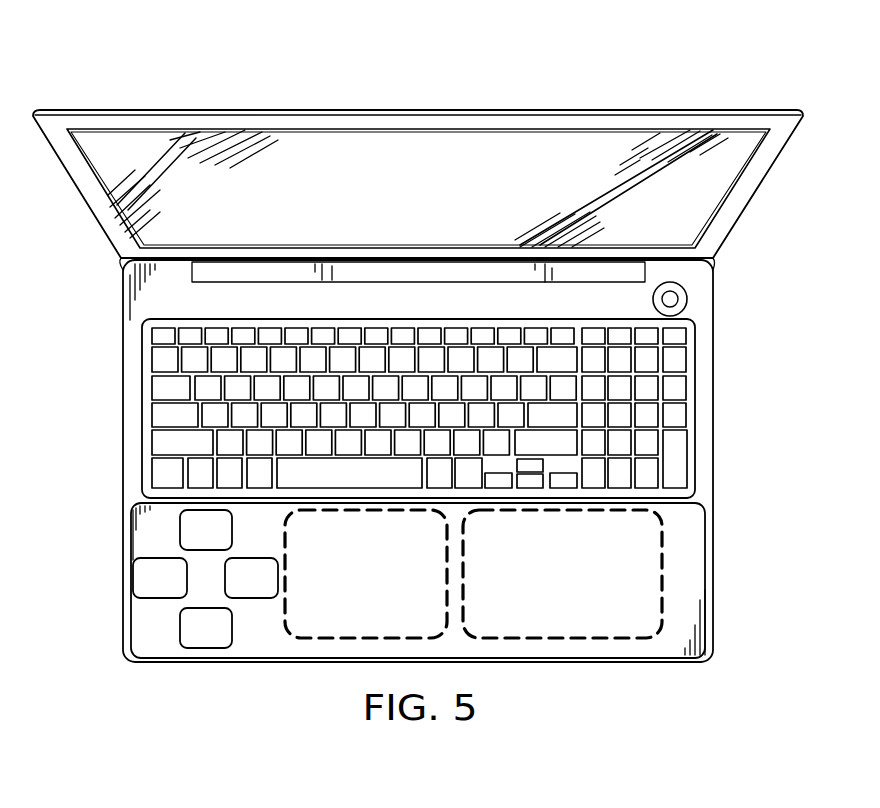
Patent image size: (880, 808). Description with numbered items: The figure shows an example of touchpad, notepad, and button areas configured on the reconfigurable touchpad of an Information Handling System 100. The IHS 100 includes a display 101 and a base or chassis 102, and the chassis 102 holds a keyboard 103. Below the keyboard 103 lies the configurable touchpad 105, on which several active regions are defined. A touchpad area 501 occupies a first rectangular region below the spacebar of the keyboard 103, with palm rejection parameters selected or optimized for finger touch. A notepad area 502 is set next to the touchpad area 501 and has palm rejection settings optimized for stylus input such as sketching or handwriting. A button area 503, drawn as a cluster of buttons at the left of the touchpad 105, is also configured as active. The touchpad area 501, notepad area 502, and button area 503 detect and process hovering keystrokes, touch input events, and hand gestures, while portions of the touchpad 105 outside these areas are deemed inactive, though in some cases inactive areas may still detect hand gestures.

The Information Handling System 100 is at (418, 364).
The display 101 is at (440, 205).
The base or chassis 102 is at (713, 367).
The keyboard 103 is at (142, 360).
The configurable touchpad 105 is at (708, 532).
The touchpad area 501 is at (388, 590).
The notepad area 502 is at (584, 590).
The button area 503 is at (150, 632).